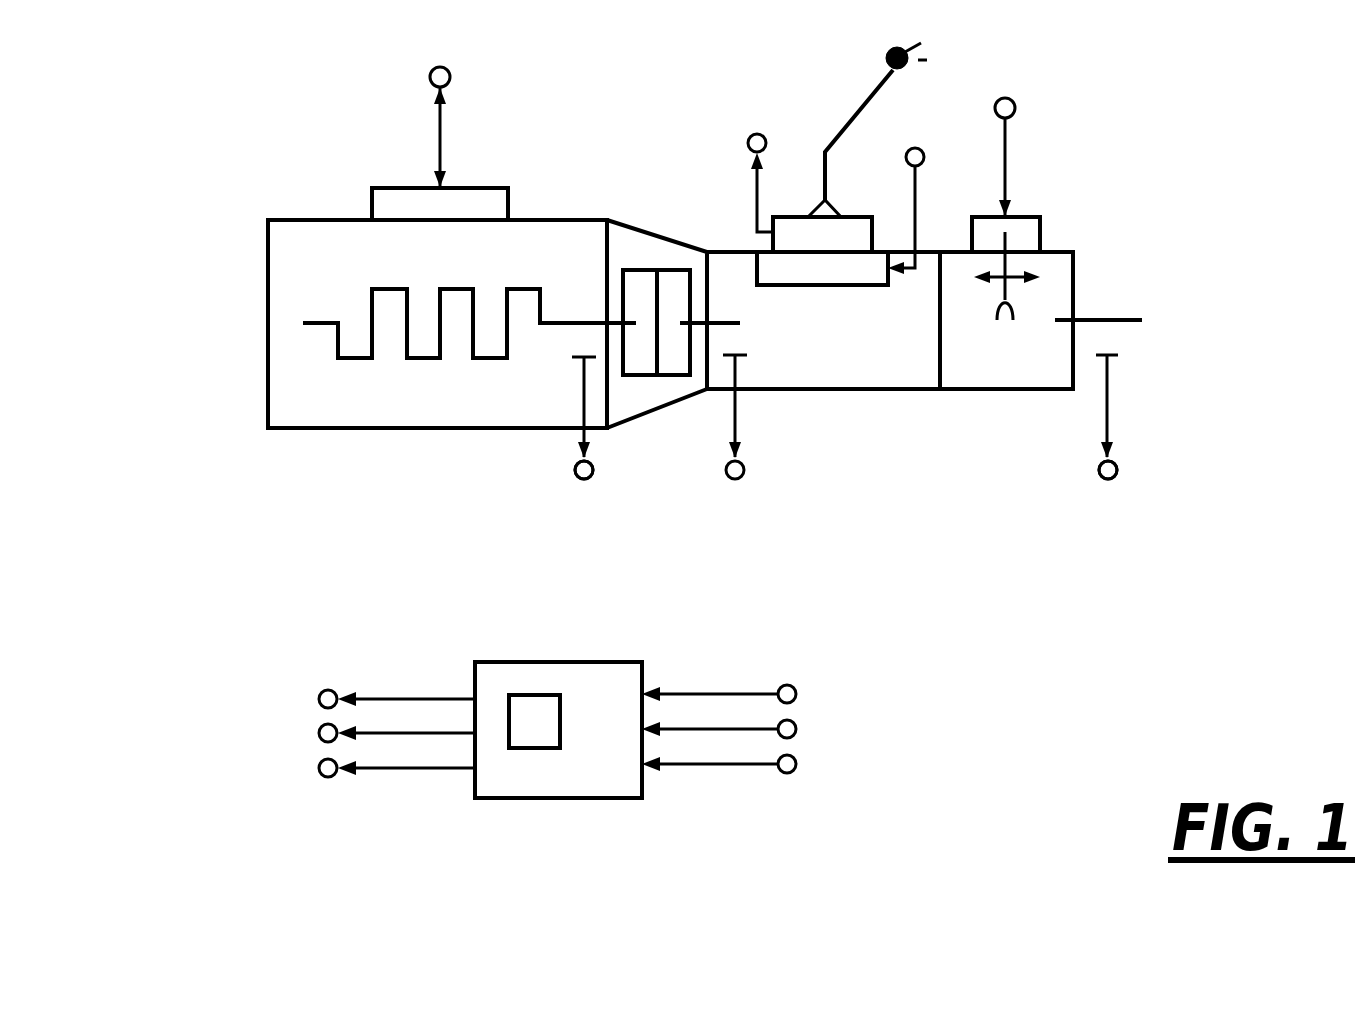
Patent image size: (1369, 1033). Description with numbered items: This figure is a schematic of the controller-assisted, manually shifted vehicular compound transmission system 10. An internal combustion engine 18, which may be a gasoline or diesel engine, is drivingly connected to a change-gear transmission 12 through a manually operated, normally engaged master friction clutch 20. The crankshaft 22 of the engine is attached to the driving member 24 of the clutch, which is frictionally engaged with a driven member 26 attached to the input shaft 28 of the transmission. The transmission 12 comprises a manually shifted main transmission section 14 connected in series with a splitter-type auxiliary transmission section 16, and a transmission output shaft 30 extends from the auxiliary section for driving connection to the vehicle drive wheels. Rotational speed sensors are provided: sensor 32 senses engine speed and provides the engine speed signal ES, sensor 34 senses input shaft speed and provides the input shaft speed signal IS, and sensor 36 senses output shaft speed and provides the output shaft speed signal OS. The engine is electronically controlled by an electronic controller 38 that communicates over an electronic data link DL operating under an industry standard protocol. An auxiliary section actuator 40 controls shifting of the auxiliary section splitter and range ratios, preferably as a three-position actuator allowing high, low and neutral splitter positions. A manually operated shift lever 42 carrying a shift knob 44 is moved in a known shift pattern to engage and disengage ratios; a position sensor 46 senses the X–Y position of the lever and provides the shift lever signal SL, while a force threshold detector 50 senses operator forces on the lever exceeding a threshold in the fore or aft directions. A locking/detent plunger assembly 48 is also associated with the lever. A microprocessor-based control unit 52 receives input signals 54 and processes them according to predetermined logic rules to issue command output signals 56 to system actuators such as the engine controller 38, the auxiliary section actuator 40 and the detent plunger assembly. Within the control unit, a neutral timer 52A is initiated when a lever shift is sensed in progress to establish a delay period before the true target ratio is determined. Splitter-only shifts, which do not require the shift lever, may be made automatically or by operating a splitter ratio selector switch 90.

The controller-assisted manually shifted vehicular compound transmission system 10 is at (266, 84).
The change-gear transmission 12 is at (920, 495).
The main transmission section 14 is at (858, 372).
The auxiliary transmission section 16 is at (1023, 372).
The internal combustion engine 18 is at (340, 395).
The master friction clutch 20 is at (642, 255).
The crankshaft 22 is at (577, 322).
The driving member 24 is at (642, 357).
The driven member 26 is at (675, 357).
The input shaft 28 is at (722, 310).
The transmission output shaft 30 is at (1107, 318).
The rotational speed sensor 32 is at (582, 387).
The rotational speed sensor 34 is at (737, 415).
The rotational speed sensor 36 is at (1110, 423).
The electronic controller 38 is at (407, 203).
The auxiliary section actuator 40 is at (1025, 233).
The shift lever 42 is at (841, 127).
The shift knob 44 is at (888, 54).
The position sensor 46 is at (800, 235).
The locking/detent plunger assembly 48 is at (823, 268).
The force threshold detector 50 is at (895, 70).
The control unit 52 is at (543, 778).
The neutral timer 52A is at (542, 712).
The input signals 54 is at (727, 818).
The command output signals 56 is at (425, 805).
The splitter ratio selector switch 90 is at (937, 52).
The electronic data link DL is at (457, 138).
The shift lever position signal SL is at (766, 137).
The engine rotational speed signal ES is at (582, 483).
The input shaft rotational speed signal IS is at (746, 478).
The output shaft rotational speed signal OS is at (1108, 482).